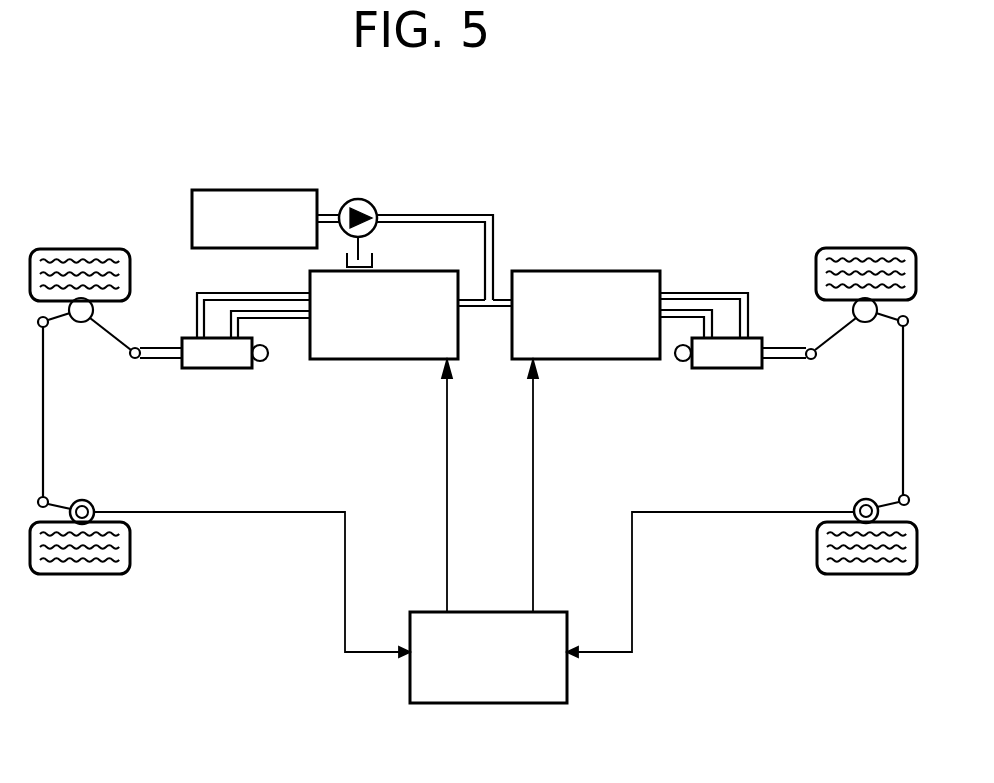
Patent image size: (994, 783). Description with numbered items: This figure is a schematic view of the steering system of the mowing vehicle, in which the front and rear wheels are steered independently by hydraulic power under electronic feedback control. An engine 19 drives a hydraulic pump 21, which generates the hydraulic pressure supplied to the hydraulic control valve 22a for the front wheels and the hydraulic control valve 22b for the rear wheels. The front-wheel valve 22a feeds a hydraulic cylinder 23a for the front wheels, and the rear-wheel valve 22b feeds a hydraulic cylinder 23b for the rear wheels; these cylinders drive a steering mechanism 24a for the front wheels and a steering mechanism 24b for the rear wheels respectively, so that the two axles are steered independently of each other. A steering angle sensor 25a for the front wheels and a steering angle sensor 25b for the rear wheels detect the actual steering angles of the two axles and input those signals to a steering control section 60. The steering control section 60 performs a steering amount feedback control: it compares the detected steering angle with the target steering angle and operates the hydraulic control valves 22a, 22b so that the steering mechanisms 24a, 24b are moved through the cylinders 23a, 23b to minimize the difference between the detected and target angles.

The engine 19 is at (282, 190).
The hydraulic pump 21 is at (366, 200).
The hydraulic control valve for front wheels 22a is at (347, 360).
The hydraulic control valve for rear wheels 22b is at (582, 360).
The hydraulic cylinder for front wheels 23a is at (212, 368).
The hydraulic cylinder for rear wheels 23b is at (725, 368).
The steering mechanism for front wheels 24a is at (45, 362).
The steering mechanism for rear wheels 24b is at (903, 374).
The steering angle sensor for front wheels 25a is at (90, 503).
The steering angle sensor for rear wheels 25b is at (858, 502).
The steering control section 60 is at (527, 703).